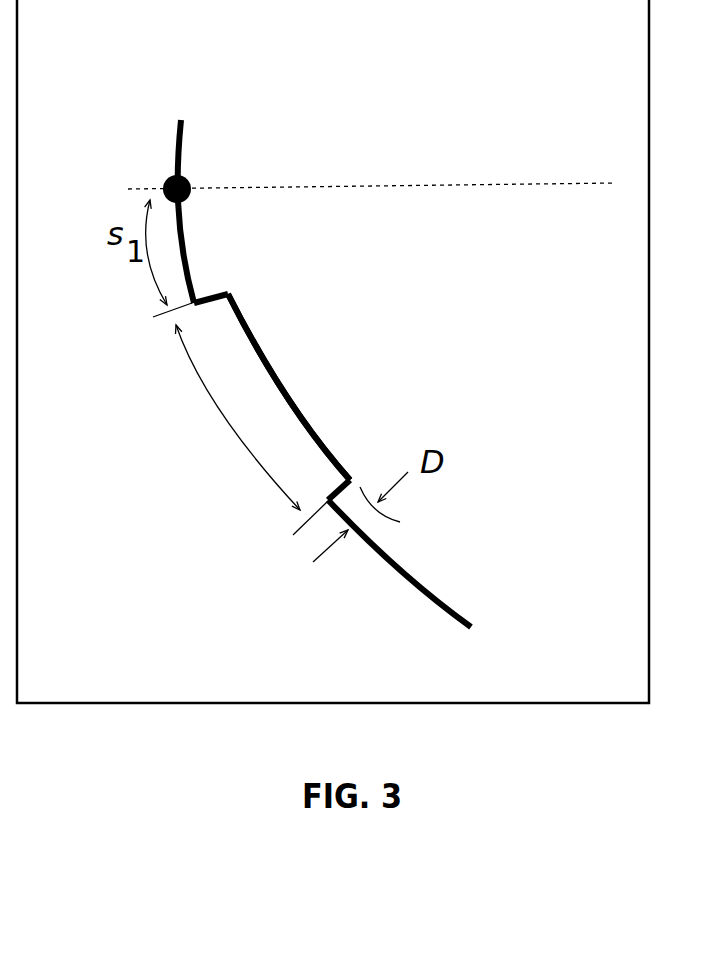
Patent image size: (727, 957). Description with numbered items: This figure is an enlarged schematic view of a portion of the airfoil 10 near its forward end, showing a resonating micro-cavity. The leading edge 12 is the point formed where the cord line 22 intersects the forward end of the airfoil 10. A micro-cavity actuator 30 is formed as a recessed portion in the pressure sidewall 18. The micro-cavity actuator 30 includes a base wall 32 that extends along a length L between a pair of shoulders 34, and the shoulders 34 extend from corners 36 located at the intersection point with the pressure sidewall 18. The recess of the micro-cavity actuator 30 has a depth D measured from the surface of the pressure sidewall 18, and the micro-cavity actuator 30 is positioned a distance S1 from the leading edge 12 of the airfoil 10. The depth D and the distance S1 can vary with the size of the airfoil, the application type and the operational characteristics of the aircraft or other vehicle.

The airfoil 10 is at (482, 340).
The leading edge 12 is at (172, 182).
The pressure sidewall 18 is at (407, 580).
The cord line 22 is at (567, 183).
The micro-cavity actuator 30 is at (280, 383).
The base wall 32 is at (297, 417).
The shoulders 34 is at (215, 292).
The corners 36 is at (187, 312).